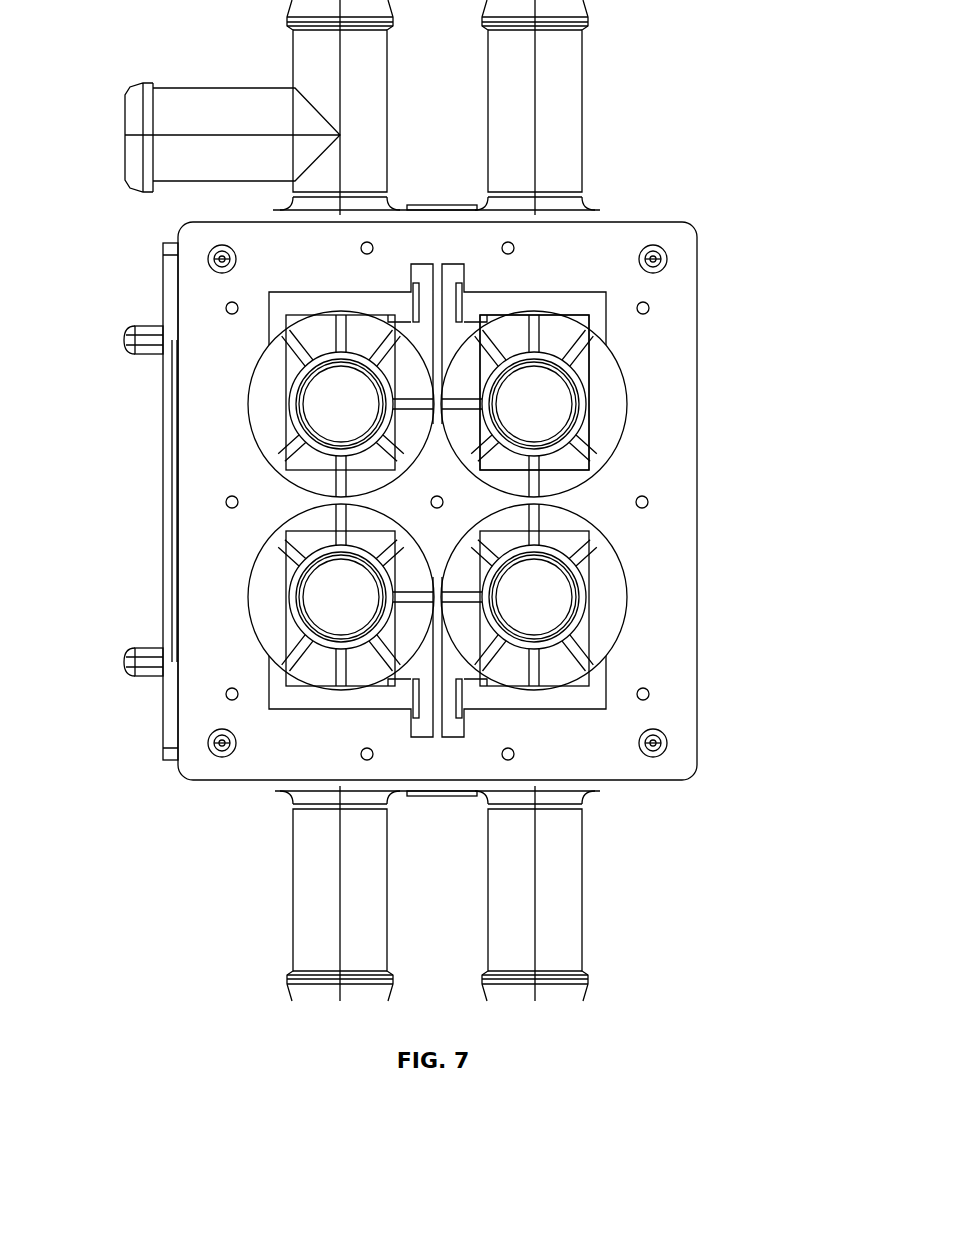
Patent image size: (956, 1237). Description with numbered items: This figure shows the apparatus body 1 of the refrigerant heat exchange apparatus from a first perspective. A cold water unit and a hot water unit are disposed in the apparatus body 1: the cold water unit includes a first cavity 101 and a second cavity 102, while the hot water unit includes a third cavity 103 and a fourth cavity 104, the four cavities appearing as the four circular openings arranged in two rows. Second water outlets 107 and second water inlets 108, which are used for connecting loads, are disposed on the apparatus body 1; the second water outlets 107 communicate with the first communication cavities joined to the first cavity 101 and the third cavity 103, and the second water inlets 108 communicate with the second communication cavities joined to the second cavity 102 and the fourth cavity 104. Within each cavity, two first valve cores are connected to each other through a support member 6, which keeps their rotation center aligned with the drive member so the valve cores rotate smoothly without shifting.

The apparatus body 1 is at (697, 318).
The support member 6 is at (589, 462).
The first cavity 101 is at (262, 416).
The second cavity 102 is at (260, 610).
The third cavity 103 is at (627, 404).
The fourth cavity 104 is at (627, 598).
The second water outlet 107 is at (178, 88).
The second water inlet 108 is at (295, 902).